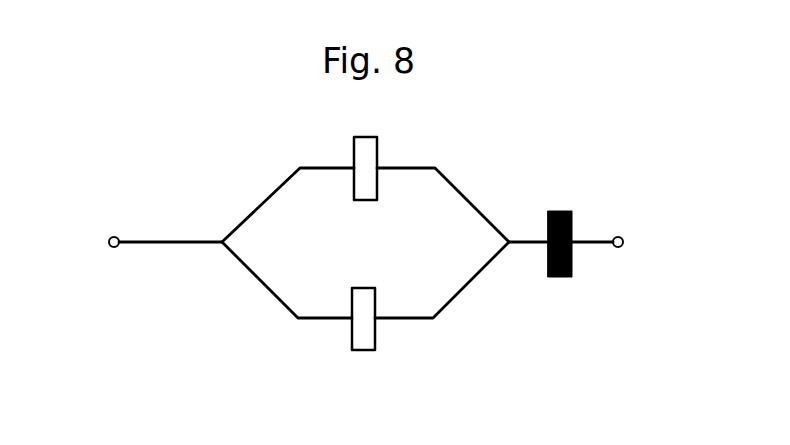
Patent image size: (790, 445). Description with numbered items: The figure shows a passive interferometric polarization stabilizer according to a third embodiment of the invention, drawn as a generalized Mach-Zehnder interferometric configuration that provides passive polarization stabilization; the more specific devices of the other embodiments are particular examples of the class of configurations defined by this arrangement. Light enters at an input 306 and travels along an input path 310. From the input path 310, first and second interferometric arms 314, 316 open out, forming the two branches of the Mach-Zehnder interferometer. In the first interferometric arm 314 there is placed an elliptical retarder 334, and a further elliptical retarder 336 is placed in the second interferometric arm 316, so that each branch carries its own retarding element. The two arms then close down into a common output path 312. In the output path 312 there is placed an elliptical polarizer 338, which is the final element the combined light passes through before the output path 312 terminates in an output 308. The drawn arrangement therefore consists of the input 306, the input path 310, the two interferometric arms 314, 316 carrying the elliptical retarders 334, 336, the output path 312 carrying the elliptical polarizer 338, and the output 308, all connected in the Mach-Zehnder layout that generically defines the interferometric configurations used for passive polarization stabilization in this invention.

The input 306 is at (114, 250).
The output 308 is at (621, 249).
The input path 310 is at (174, 243).
The output path 312 is at (594, 243).
The first interferometric arm 314 is at (262, 202).
The second interferometric arm 316 is at (245, 271).
The elliptical retarder 334 is at (380, 155).
The further elliptical retarder 336 is at (363, 350).
The elliptical polarizer 338 is at (557, 277).